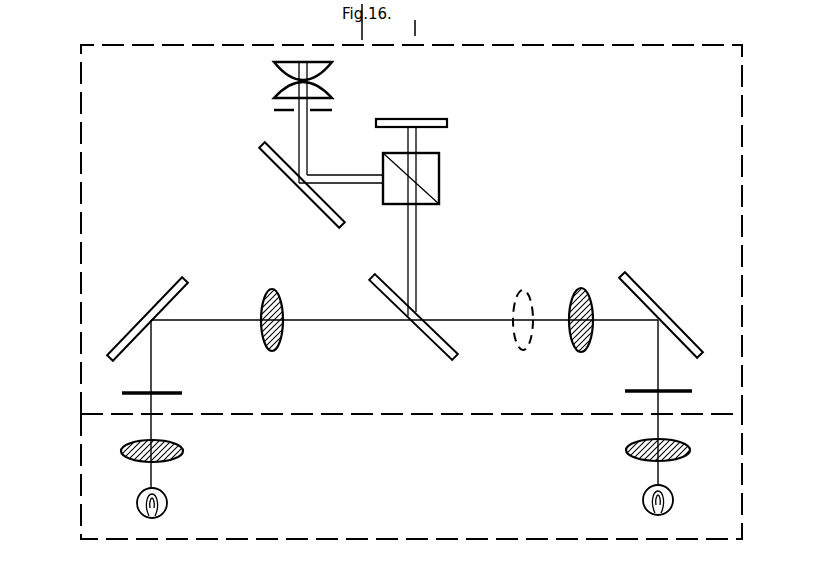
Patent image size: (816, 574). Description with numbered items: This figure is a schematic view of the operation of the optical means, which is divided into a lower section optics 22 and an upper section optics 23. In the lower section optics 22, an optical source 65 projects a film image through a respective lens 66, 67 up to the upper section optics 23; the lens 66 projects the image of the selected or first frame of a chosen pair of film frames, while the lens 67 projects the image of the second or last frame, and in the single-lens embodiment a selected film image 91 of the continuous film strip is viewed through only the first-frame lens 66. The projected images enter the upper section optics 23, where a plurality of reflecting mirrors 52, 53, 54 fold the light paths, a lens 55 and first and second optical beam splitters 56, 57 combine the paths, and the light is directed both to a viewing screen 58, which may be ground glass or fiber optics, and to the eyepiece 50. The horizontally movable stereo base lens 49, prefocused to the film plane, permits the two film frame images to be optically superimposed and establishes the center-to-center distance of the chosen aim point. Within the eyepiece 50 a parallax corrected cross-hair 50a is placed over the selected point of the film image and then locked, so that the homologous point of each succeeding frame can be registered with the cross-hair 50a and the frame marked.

The lower section optics 22 is at (84, 490).
The upper section optics 23 is at (80, 232).
The stereo base lens 49 is at (582, 289).
The eyepiece 50 is at (333, 88).
The parallax corrected cross-hair 50a is at (279, 110).
The reflecting mirror 52 is at (177, 277).
The reflecting mirror 53 is at (640, 290).
The reflecting mirror 54 is at (273, 163).
The lens 55 is at (283, 293).
The first optical beam splitter 56 is at (454, 357).
The second optical beam splitter 57 is at (439, 177).
The viewing screen 58 is at (445, 121).
The optical source 65 is at (167, 500).
The lens 66 is at (184, 451).
The lens 67 is at (625, 450).
The selected film image 91 is at (166, 391).